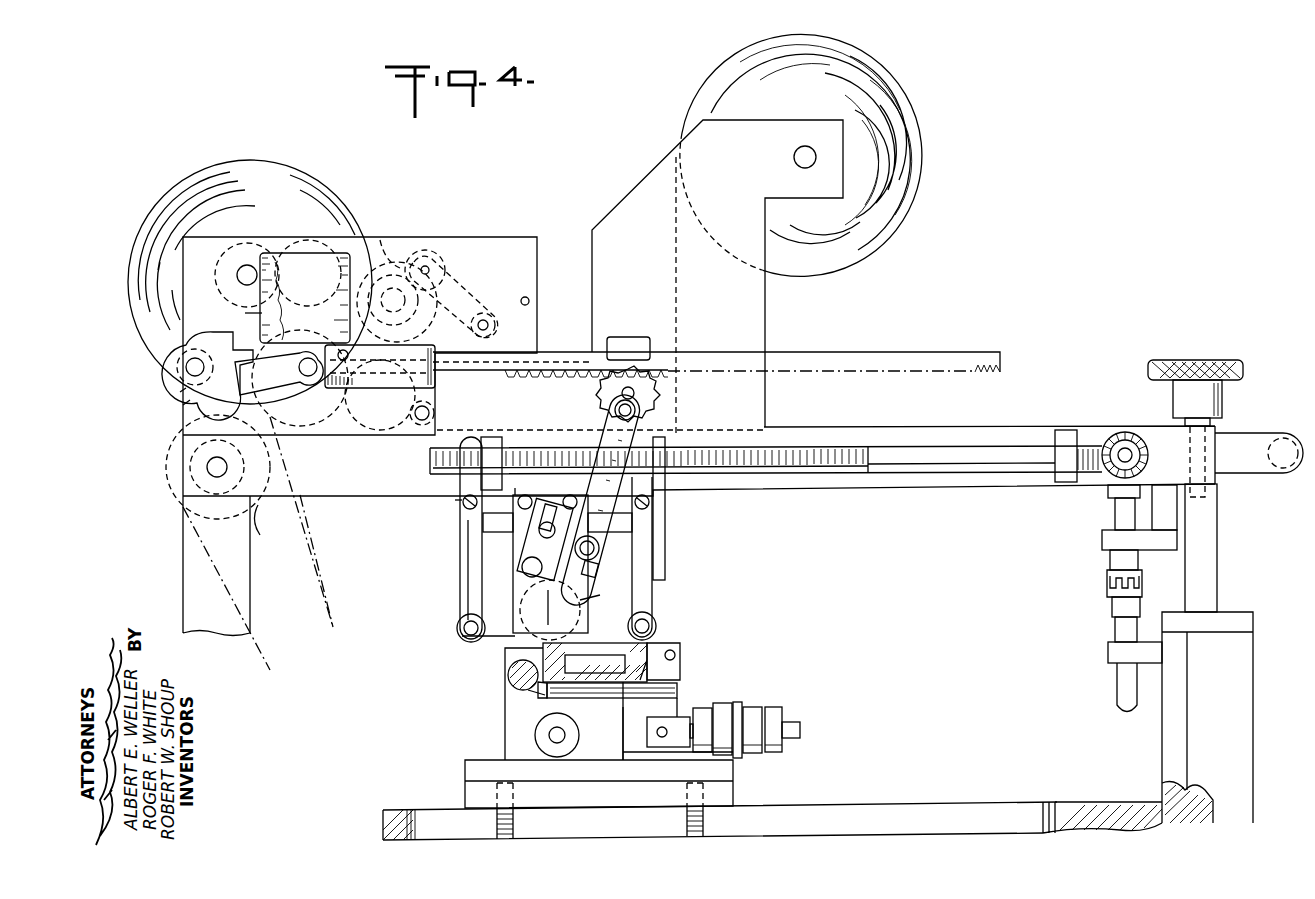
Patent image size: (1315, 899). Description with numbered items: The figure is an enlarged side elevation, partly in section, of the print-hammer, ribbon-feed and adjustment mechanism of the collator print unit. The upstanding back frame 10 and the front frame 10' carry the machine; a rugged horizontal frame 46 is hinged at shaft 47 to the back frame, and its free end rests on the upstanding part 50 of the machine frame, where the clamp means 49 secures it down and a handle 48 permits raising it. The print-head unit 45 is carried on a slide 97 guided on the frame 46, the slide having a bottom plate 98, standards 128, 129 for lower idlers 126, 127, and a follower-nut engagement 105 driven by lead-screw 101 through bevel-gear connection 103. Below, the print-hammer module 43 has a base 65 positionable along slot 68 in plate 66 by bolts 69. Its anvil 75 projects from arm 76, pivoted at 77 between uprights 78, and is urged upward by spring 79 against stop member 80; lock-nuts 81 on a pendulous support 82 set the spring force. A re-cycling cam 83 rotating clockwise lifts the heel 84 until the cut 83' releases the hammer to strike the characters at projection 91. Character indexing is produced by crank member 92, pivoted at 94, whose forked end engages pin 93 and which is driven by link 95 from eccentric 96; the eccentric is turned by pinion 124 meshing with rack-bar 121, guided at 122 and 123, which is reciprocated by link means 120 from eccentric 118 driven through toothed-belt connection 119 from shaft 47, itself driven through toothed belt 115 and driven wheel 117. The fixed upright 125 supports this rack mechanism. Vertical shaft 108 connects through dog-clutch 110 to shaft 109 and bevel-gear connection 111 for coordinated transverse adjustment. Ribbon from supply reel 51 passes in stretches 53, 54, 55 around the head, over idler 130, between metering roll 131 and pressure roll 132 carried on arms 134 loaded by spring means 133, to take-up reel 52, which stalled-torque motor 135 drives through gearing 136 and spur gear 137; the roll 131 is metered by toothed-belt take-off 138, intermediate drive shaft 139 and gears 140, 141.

The frame 10 is at (672, 453).
The front frame 10' is at (1225, 717).
The print-hammer module 43 is at (695, 680).
The print-head unit 45 is at (590, 590).
The horizontal frame 46 is at (993, 437).
The hinge shaft 47 is at (207, 465).
The handle 48 is at (1287, 432).
The clamp means 49 is at (1203, 360).
The upstanding part of machine frame 50 is at (1217, 545).
The supply reel 51 is at (888, 85).
The take-up reel 52 is at (252, 162).
The ribbon stretch 53 is at (665, 540).
The lower ribbon stretch 54 is at (490, 637).
The ribbon stretch 55 is at (455, 548).
The base 65 is at (735, 790).
The plate 66 is at (1060, 802).
The slot 68 is at (833, 803).
The bolts 69 is at (495, 818).
The anvil 75 is at (549, 620).
The arm 76 is at (585, 712).
The pivot 77 is at (655, 642).
The uprights 78 is at (505, 738).
The spring 79 is at (598, 698).
The stop member 80 is at (545, 698).
The lock-nuts 81 is at (775, 705).
The pendulous support 82 is at (682, 657).
The re-cycling cam 83 is at (496, 678).
The cut 83' is at (505, 705).
The heel 84 is at (528, 642).
The projection 91 is at (585, 603).
The crank member 92 is at (528, 537).
The pin 93 is at (522, 570).
The crank pivot 94 is at (525, 490).
The link 95 is at (650, 503).
The eccentric 96 is at (612, 405).
The slide 97 is at (765, 398).
The bottom plate 98 is at (462, 503).
The lead-screw 101 is at (904, 442).
The bevel-gear connection 103 is at (1103, 412).
The follower-nut engagement 105 is at (497, 434).
The vertical shaft 108 is at (1116, 688).
The shaft 109 is at (1112, 512).
The dog-clutch 110 is at (1106, 584).
The bevel-gear connection 111 is at (1148, 440).
The toothed belt 115 is at (308, 520).
The driven wheel 117 is at (262, 512).
The eccentric 118 is at (215, 332).
The toothed-belt connection 119 is at (185, 402).
The link means 120 is at (266, 388).
The rack-bar 121 is at (522, 306).
The guide means 122 is at (368, 392).
The guide means 123 is at (624, 337).
The pinion 124 is at (655, 378).
The upright 125 is at (410, 262).
The lower idler 126 is at (655, 618).
The lower idler 127 is at (455, 632).
The standard 128 is at (652, 573).
The standard 129 is at (462, 523).
The idler 130 is at (413, 418).
The ribbon-advance metering roll 131 is at (388, 275).
The pressure roll 132 is at (440, 258).
The spring means 133 is at (488, 312).
The arms 134 is at (468, 300).
The stalled-torque motor 135 is at (262, 315).
The gearing 136 is at (306, 240).
The spur gear 137 is at (249, 243).
The toothed-belt take-off 138 is at (298, 452).
The intermediate drive shaft 139 is at (322, 404).
The gear 140 is at (322, 300).
The gear 141 is at (386, 238).